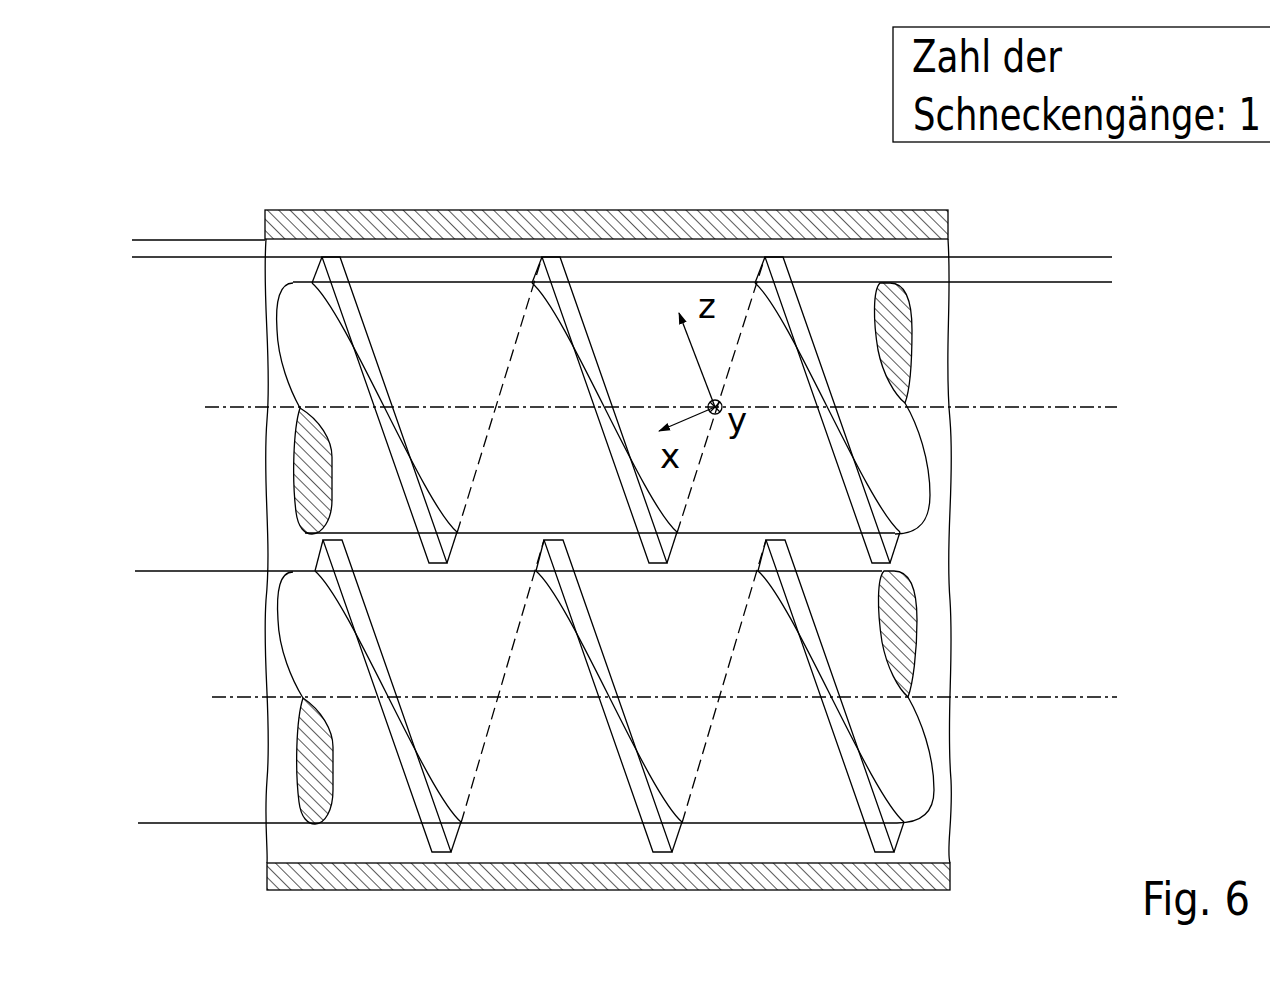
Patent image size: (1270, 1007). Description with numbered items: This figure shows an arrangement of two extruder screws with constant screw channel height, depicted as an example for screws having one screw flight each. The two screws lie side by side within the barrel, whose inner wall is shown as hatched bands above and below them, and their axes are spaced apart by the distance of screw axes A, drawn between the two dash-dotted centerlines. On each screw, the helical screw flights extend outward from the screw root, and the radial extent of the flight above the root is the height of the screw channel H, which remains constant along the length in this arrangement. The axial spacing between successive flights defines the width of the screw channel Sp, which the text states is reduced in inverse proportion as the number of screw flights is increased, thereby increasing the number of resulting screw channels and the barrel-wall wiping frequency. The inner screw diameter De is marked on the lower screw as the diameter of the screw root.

The width of the screw channel Sp is at (542, 257).
The height of the screw channel H is at (1100, 307).
The distance of screw axes A is at (1100, 408).
The inner screw diameter De is at (156, 572).